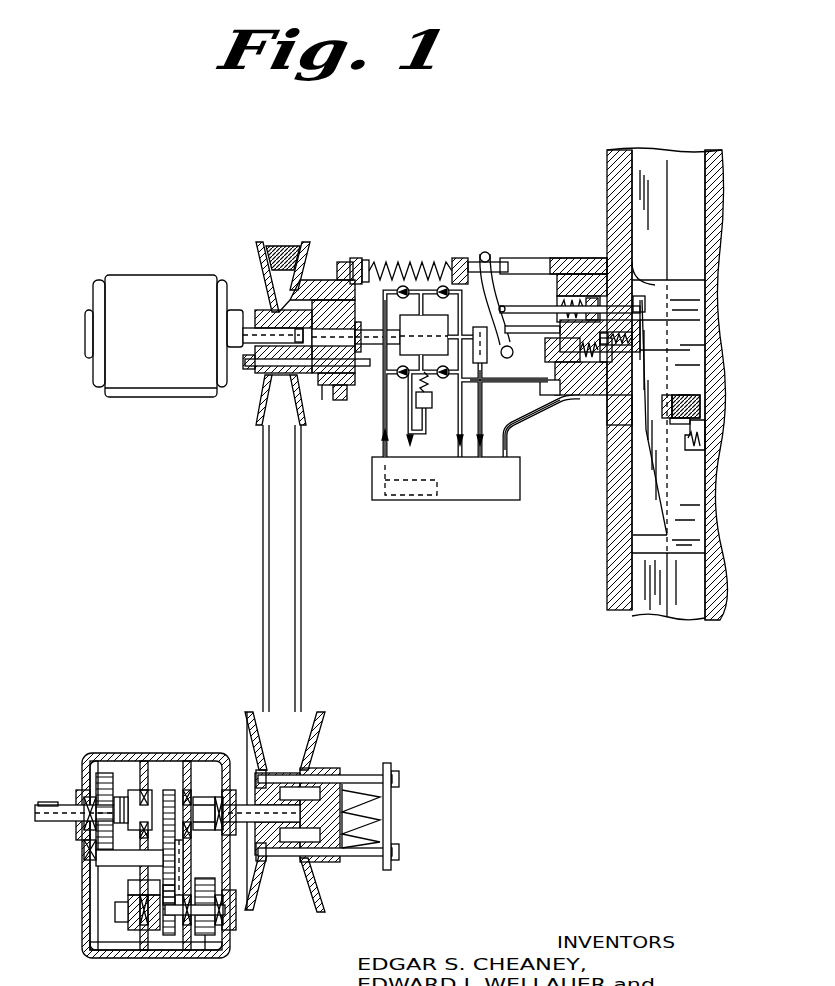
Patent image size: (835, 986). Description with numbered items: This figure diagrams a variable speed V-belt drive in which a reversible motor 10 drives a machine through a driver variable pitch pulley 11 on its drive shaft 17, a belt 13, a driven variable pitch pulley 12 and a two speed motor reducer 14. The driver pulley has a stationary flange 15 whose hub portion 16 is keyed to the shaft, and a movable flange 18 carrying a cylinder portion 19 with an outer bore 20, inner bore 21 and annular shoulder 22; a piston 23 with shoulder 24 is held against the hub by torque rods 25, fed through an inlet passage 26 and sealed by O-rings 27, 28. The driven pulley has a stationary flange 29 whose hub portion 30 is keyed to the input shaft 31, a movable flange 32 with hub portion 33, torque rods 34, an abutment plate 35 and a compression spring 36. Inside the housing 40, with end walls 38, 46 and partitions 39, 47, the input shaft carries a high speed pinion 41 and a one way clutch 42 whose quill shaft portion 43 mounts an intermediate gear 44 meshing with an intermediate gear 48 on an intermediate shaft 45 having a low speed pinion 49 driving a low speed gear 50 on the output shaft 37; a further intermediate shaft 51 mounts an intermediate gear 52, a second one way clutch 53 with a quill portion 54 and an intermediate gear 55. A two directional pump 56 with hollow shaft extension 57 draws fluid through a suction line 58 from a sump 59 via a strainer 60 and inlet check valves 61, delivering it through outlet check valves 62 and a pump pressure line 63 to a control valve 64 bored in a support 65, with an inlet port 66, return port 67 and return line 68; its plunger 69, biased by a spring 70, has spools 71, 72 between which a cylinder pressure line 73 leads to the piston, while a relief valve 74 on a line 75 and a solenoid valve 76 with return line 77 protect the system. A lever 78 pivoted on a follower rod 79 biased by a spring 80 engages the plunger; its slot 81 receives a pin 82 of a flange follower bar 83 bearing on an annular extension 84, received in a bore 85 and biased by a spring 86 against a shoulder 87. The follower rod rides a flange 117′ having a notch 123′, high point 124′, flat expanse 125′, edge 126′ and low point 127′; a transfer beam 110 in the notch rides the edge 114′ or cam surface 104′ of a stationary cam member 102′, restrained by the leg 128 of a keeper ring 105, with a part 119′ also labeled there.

The reversible electrical motor 10 is at (157, 283).
The driver variable pitch pulley 11 is at (285, 240).
The driven variable pitch pulley 12 is at (312, 915).
The belt 13 is at (300, 584).
The two speed motor reducer 14 is at (165, 960).
The stationary flange 15 is at (258, 256).
The hub portion 16 is at (275, 312).
The drive shaft 17 is at (250, 362).
The movable flange 18 is at (308, 244).
The cylinder portion 19 is at (332, 385).
The enlarged outer bore 20 is at (340, 270).
The reduced inner bore 21 is at (312, 298).
The annular shoulder 22 is at (322, 400).
The piston 23 is at (362, 296).
The annular shoulder 24 is at (345, 392).
The torque rods 25 is at (258, 385).
The inlet passage 26 is at (362, 316).
The sealing O-ring 27 is at (356, 380).
The sealing O-ring 28 is at (289, 382).
The stationary flange 29 is at (322, 720).
The central hub portion 30 is at (286, 858).
The input shaft 31 is at (232, 811).
The movable flange 32 is at (246, 716).
The hub portion 33 is at (283, 785).
The torque rods 34 is at (358, 774).
The abutment plate 35 is at (392, 822).
The helical compression spring 36 is at (386, 810).
The output shaft 37 is at (48, 814).
The end wall 38 is at (226, 940).
The interior partition 39 is at (182, 775).
The housing 40 is at (200, 952).
The high speed pinion 41 is at (205, 797).
The one way clutch 42 is at (132, 790).
The quill shaft portion 43 is at (163, 790).
The intermediate gear 44 is at (192, 775).
The intermediate shaft 45 is at (129, 858).
The second end wall 46 is at (84, 912).
The second partition 47 is at (135, 930).
The intermediate gear 48 is at (176, 860).
The low speed pinion 49 is at (105, 866).
The low speed gear 50 is at (104, 771).
The further intermediate shaft 51 is at (226, 910).
The intermediate gear 52 is at (210, 942).
The second one way clutch 53 is at (127, 900).
The quill portion 54 is at (165, 925).
The intermediate gear 55 is at (176, 870).
The two directional fluid pump 56 is at (424, 335).
The hollow shaft extension 57 is at (424, 344).
The pump suction line 58 is at (383, 440).
The sump 59 is at (480, 498).
The suction strainer 60 is at (409, 500).
The inlet check valves 61 is at (410, 291).
The outlet check valves 62 is at (449, 291).
The pump pressure line 63 is at (518, 383).
The control valve 64 is at (568, 395).
The support 65 is at (558, 262).
The first annular relief 66 is at (548, 358).
The second annular relief 67 is at (612, 373).
The valve return line 68 is at (527, 428).
The plunger 69 is at (640, 333).
The compression spring 70 is at (640, 346).
The spool 71 is at (548, 330).
The spool 72 is at (592, 334).
The cylinder pressure line 73 is at (500, 328).
The pressure relief valve 74 is at (416, 405).
The line 75 is at (432, 402).
The solenoid controlled valve 76 is at (473, 348).
The return line 77 is at (484, 418).
The lever 78 is at (494, 302).
The follower rod 79 is at (514, 307).
The compression spring 80 is at (558, 290).
The elongated slot 81 is at (487, 254).
The pin 82 is at (500, 262).
The flange follower bar 83 is at (536, 262).
The annular extension 84 is at (356, 258).
The axial bore 85 is at (648, 278).
The compression spring 86 is at (440, 262).
The shoulder 87 is at (370, 258).
The stationary cam member 102′ is at (648, 606).
The cam surface 104′ is at (660, 285).
The keeper ring 105 is at (692, 448).
The transfer beam 110 is at (612, 405).
The edge 114′ is at (668, 200).
The flange 117′ is at (686, 556).
The pad 119′ is at (684, 393).
The notch 123′ is at (694, 395).
The high point 124′ is at (660, 530).
The flat expanse 125′ is at (642, 433).
The edge 126′ is at (668, 397).
The low point 127′ is at (646, 305).
The leg 128 is at (672, 418).